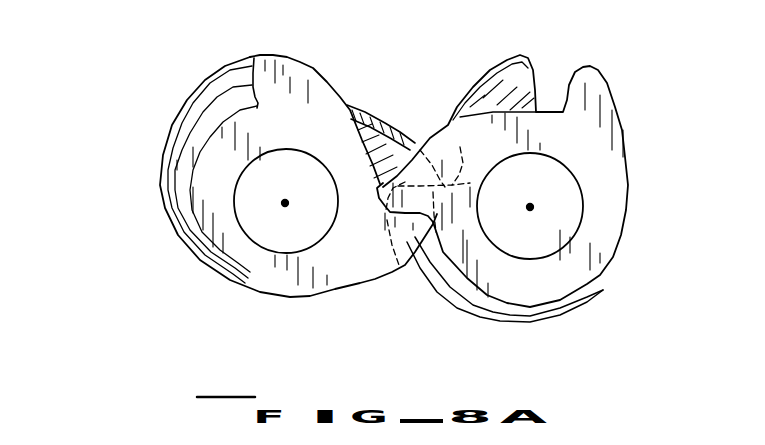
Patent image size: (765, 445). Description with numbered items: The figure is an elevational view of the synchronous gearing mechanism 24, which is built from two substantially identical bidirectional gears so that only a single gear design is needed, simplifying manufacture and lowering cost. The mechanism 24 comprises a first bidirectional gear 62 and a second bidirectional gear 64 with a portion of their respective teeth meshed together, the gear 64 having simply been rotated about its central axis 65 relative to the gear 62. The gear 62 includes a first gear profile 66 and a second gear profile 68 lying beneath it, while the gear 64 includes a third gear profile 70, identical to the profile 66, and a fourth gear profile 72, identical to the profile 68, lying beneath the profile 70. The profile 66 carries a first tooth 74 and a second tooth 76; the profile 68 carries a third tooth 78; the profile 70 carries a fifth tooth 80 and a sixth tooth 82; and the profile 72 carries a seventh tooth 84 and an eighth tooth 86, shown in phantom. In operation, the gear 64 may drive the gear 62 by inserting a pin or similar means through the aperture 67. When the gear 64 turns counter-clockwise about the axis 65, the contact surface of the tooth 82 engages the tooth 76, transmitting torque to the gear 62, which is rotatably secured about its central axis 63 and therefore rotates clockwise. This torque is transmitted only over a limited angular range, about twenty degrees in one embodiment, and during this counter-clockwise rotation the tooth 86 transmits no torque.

The synchronous gearing mechanism 24 is at (112, 301).
The first bidirectional gear 62 is at (298, 205).
The central axis 63 is at (286, 184).
The second bidirectional gear 64 is at (505, 304).
The central axis 65 is at (536, 197).
The first gear profile 66 is at (252, 234).
The aperture 67 is at (589, 287).
The second gear profile 68 is at (168, 174).
The third gear profile 70 is at (534, 181).
The fourth gear profile 72 is at (505, 313).
The first tooth 74 is at (297, 55).
The second tooth 76 is at (430, 244).
The third tooth 78 is at (384, 118).
The fifth tooth 80 is at (582, 97).
The sixth tooth 82 is at (385, 222).
The seventh tooth 84 is at (493, 65).
The eighth tooth 86 is at (433, 204).